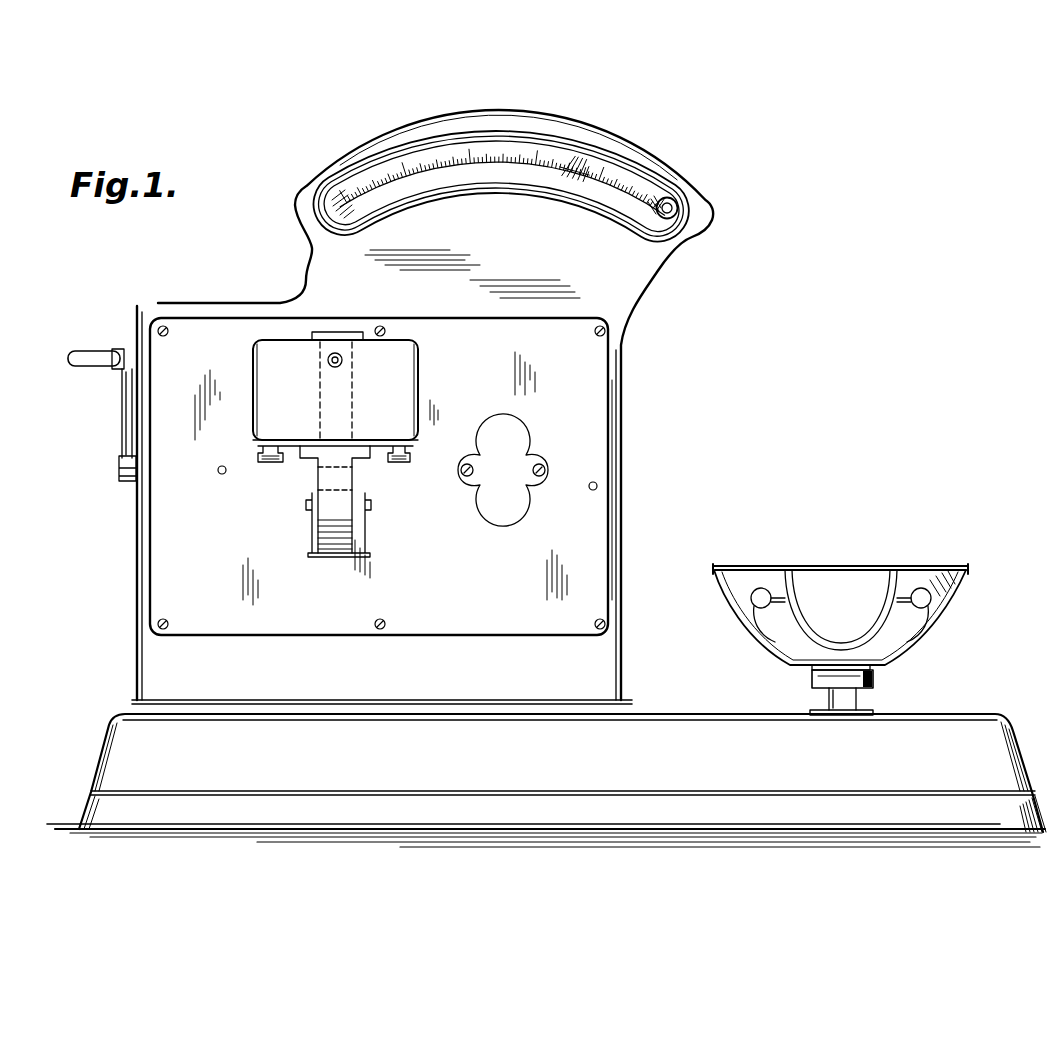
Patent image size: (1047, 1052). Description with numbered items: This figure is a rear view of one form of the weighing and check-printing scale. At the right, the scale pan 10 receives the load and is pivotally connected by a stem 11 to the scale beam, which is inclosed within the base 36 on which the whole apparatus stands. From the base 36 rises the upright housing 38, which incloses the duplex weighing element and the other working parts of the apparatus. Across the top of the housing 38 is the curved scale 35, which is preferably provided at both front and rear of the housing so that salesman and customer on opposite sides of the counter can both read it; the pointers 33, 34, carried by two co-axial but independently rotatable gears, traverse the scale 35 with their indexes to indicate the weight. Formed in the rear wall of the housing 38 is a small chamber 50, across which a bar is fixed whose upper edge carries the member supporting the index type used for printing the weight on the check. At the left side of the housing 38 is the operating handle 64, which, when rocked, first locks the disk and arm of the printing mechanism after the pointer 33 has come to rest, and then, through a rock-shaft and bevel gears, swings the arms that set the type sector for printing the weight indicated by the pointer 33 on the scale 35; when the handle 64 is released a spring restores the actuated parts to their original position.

The scale pan 10 is at (840, 617).
The stem 11 is at (858, 697).
The pointer 33 is at (663, 197).
The pointer 34 is at (633, 222).
The scale 35 is at (573, 157).
The base 36 is at (722, 715).
The upright housing 38 is at (136, 585).
The small chamber 50 is at (335, 444).
The operating handle 64 is at (125, 405).